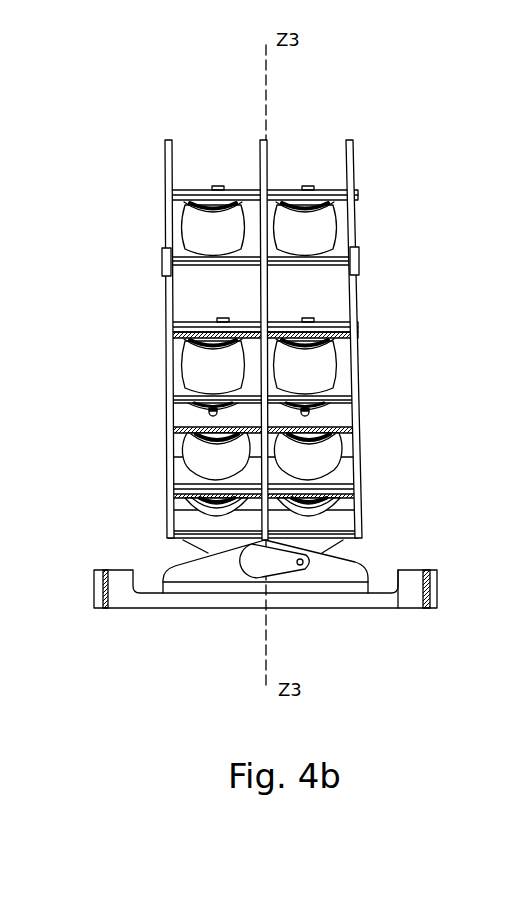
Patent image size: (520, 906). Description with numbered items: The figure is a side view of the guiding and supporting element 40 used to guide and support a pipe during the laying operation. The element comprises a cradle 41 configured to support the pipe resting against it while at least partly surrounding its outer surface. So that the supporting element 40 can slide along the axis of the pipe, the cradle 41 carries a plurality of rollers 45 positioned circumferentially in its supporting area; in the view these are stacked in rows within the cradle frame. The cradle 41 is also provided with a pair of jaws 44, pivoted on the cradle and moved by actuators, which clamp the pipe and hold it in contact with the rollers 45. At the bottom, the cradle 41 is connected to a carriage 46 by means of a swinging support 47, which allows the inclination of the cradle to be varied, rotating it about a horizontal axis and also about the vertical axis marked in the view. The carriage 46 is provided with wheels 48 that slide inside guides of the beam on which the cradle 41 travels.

The guiding and supporting element 40 is at (130, 138).
The cradle 41 is at (166, 346).
The jaws 44 is at (353, 184).
The rollers 45 is at (323, 362).
The carriage 46 is at (157, 600).
The swinging support 47 is at (357, 574).
The wheels 48 is at (435, 584).